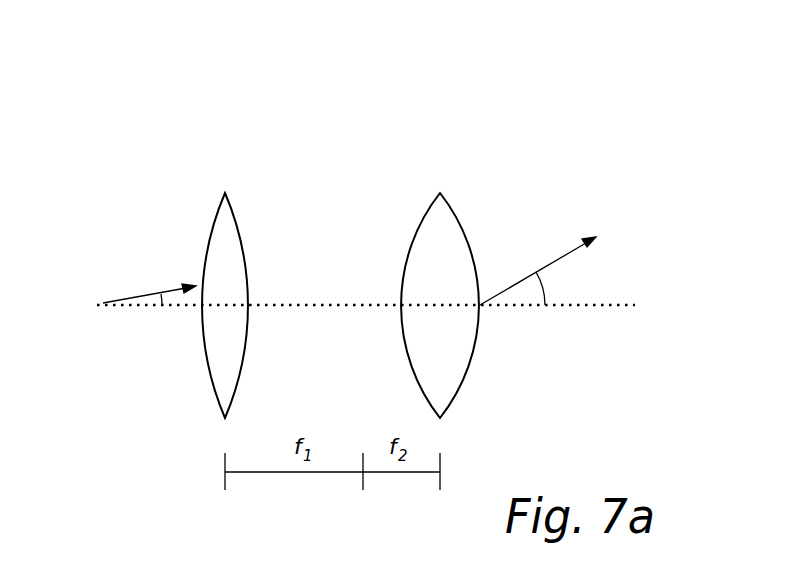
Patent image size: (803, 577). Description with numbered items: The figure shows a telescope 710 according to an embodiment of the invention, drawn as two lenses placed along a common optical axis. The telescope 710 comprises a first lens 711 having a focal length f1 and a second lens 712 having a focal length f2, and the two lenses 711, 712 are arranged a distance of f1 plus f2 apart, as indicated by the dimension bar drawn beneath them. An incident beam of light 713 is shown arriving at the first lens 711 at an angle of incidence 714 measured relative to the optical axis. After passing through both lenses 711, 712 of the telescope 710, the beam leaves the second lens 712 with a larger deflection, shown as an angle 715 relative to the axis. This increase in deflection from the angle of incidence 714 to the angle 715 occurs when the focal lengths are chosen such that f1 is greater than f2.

The telescope 710 is at (588, 82).
The lens 711 is at (238, 213).
The lens 712 is at (458, 215).
The incident beam of light 713 is at (128, 298).
The angle of incidence 714 is at (153, 303).
The angle 715 is at (525, 298).